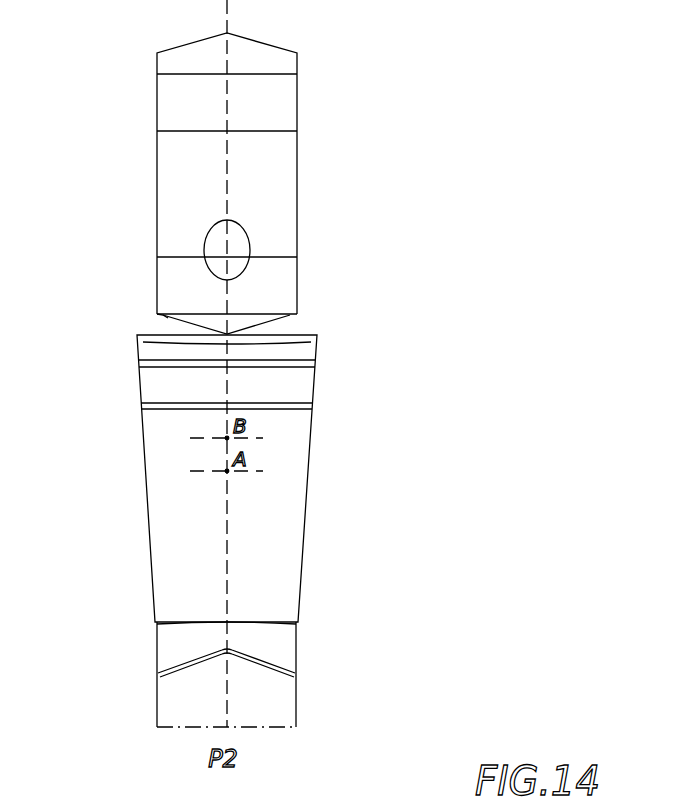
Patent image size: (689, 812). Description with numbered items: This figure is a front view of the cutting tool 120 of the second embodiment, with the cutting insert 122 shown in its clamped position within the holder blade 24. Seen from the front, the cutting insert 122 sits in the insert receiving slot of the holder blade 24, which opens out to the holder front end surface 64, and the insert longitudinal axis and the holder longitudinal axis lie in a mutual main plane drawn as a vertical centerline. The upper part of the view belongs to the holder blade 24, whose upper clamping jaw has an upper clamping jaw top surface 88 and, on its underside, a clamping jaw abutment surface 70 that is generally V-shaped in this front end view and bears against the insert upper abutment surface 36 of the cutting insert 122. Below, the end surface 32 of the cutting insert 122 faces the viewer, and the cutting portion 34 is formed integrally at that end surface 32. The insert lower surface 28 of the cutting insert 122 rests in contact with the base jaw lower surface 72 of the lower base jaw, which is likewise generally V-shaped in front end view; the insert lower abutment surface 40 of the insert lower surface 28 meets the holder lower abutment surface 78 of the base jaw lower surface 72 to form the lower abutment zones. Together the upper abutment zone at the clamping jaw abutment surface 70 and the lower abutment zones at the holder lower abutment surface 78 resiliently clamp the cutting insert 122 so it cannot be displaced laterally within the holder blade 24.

The cutting tool 120 is at (381, 52).
The upper clamping jaw top surface 88 is at (280, 180).
The holder blade 24 is at (381, 220).
The clamping jaw abutment surface 70 is at (277, 315).
The insert upper abutment surface 36 is at (178, 315).
The cutting insert 122 is at (358, 400).
The cutting portion 34 is at (122, 386).
The end surface 32 is at (285, 522).
The insert lower surface 28 is at (333, 600).
The base jaw lower surface 72 is at (154, 661).
The insert lower abutment surface 40 is at (168, 673).
The holder lower abutment surface 78 is at (290, 672).
The holder front end surface 64 is at (278, 700).